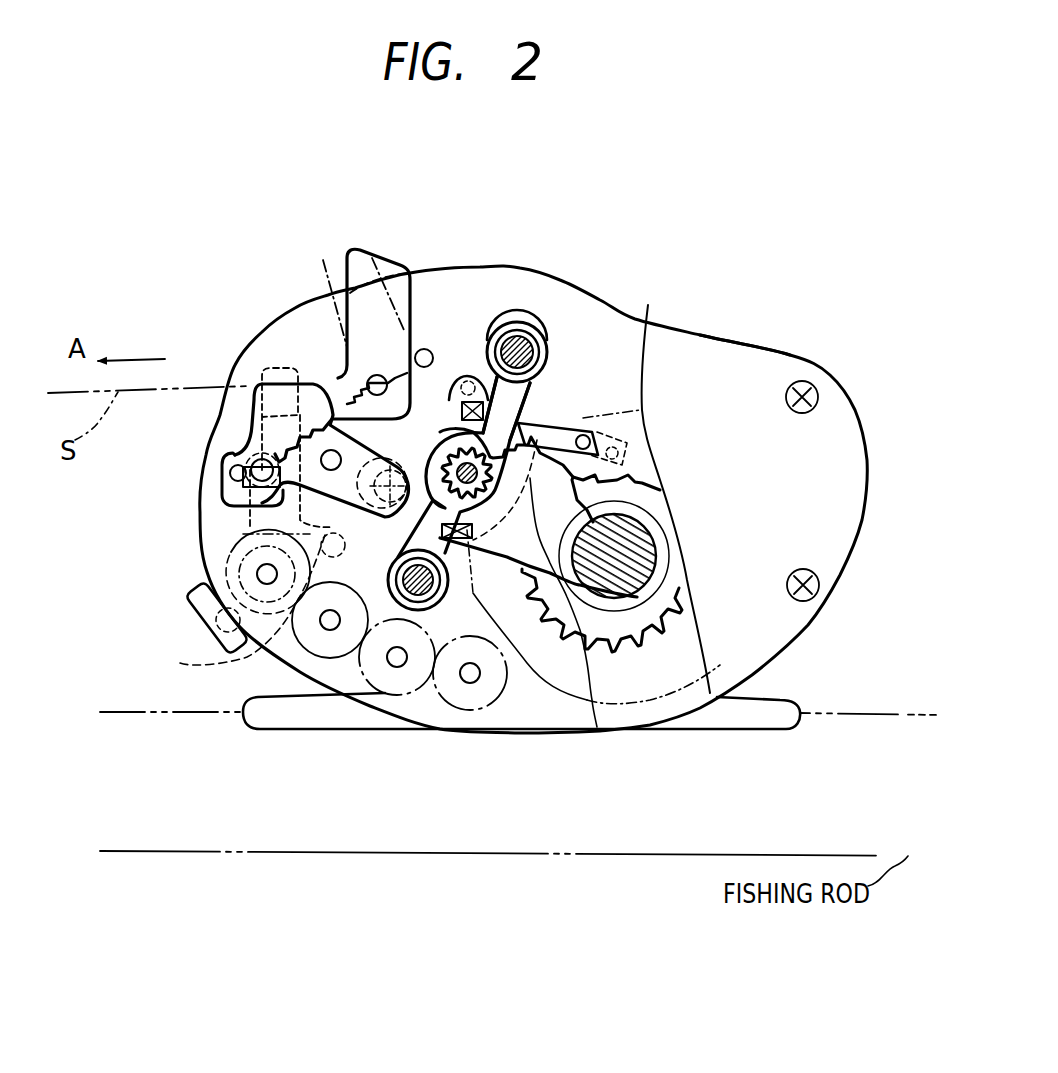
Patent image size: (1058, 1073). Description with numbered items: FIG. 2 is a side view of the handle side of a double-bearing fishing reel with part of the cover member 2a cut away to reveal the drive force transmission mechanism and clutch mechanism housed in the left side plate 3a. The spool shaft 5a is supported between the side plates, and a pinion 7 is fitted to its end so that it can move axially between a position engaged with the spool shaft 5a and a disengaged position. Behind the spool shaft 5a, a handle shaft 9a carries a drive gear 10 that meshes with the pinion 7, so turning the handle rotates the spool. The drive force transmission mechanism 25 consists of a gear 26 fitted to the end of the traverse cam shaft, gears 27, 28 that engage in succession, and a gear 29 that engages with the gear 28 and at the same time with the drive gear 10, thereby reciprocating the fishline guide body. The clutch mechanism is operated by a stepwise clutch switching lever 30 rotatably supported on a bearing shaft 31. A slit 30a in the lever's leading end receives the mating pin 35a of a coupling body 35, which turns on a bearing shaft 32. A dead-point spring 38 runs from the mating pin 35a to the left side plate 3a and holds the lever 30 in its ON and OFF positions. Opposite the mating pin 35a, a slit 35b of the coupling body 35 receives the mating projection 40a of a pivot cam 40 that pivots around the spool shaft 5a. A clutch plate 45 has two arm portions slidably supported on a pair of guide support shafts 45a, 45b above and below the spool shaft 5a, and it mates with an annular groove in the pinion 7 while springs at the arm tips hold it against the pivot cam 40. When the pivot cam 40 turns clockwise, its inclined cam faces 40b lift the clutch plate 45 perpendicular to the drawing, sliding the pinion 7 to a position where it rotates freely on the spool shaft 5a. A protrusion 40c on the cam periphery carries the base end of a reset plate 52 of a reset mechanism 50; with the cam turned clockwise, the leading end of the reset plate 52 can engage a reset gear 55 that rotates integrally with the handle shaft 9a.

The cover member 2a is at (858, 464).
The left side plate 3a is at (795, 346).
The spool shaft 5a is at (658, 612).
The pinion 7 is at (490, 490).
The handle shaft 9a is at (657, 573).
The drive gear 10 is at (642, 484).
The drive force transmission mechanism 25 is at (373, 760).
The gear 26 is at (237, 546).
The gear 27 is at (317, 648).
The gear 28 is at (362, 676).
The gear 29 is at (477, 697).
The clutch switching lever 30 is at (403, 265).
The slit 30a is at (237, 480).
The bearing shaft 31 is at (427, 348).
The bearing shaft 32 is at (321, 455).
The coupling body 35 is at (308, 382).
The mating pin 35a is at (251, 463).
The slit 35b is at (395, 468).
The dead-point spring 38 is at (366, 384).
The pivot cam 40 is at (545, 437).
The mating projection 40a is at (235, 664).
The inclined cam faces 40b is at (487, 398).
The protrusion 40c is at (492, 325).
The clutch plate 45 is at (533, 418).
The guide support shaft 45a is at (497, 345).
The guide support shaft 45b is at (413, 608).
The reset mechanism 50 is at (632, 422).
The reset plate 52 is at (600, 428).
The reset gear 55 is at (668, 527).